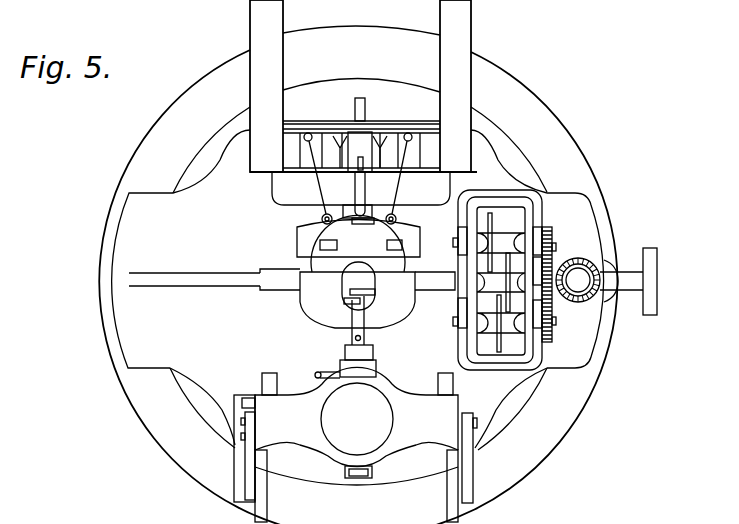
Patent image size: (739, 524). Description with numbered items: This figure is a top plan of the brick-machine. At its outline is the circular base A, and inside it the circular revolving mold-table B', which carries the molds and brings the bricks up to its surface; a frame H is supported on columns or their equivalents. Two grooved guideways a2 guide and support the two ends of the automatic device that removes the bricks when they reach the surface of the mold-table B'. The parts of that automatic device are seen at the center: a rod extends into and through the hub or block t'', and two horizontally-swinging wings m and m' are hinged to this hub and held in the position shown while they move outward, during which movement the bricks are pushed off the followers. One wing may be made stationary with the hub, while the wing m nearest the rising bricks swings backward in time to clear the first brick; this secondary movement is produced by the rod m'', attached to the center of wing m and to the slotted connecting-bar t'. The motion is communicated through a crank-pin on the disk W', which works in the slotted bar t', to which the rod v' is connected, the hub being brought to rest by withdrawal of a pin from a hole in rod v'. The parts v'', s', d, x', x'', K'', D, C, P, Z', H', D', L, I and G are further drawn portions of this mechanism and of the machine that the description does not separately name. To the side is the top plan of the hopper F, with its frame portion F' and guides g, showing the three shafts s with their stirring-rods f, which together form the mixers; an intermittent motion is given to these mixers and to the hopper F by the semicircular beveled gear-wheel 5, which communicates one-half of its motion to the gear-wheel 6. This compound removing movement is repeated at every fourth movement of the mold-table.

The circular base A is at (361, 45).
The circular revolving mold-table B' is at (361, 91).
The rod v' is at (366, 109).
The grooved guideways a2 is at (363, 86).
The swinging wing m is at (299, 139).
The swinging wing m' is at (416, 139).
The valve chambers D' is at (360, 150).
The hub or block t'' is at (360, 152).
The rod m'' is at (358, 182).
The valve rod v'' is at (366, 188).
The slide block s' is at (352, 209).
The slotted connecting-bar t' is at (369, 219).
The disk W' is at (358, 243).
The frame H is at (358, 289).
The shaft H' is at (292, 279).
The slot d is at (358, 286).
The rod x' is at (352, 329).
The rod x'' is at (363, 317).
The posts K'' is at (357, 384).
The base block D is at (356, 416).
The cylinder C is at (357, 430).
The pillars P is at (356, 486).
The side plates Z' is at (357, 449).
The hopper F is at (493, 280).
The housing frame F' is at (509, 280).
The stirring-rods f is at (495, 282).
The guides g is at (520, 284).
The shafts s is at (519, 283).
The gear-wheel 6 is at (552, 284).
The semicircular beveled gear-wheel 5 is at (586, 313).
The gear wheel L is at (578, 280).
The spindle I is at (621, 281).
The handle G is at (660, 281).